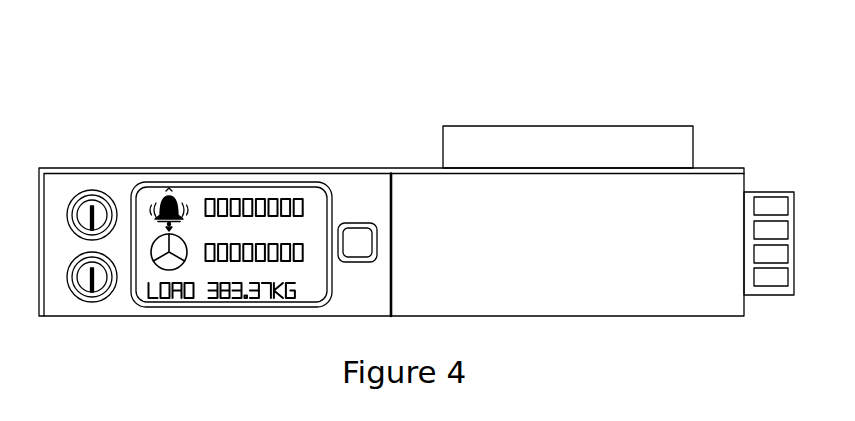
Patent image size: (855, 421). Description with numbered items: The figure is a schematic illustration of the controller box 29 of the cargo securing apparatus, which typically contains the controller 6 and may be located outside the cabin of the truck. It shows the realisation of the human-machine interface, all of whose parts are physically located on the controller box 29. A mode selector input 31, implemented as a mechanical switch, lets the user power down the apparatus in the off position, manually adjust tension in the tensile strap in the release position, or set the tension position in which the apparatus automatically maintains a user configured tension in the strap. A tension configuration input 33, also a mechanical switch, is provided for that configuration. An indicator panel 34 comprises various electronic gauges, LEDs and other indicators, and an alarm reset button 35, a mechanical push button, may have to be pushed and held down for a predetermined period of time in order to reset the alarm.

The controller 6 is at (171, 110).
The controller box 29 is at (423, 168).
The mode selector input 31 is at (97, 190).
The tension configuration input 33 is at (89, 302).
The indicator panel 34 is at (223, 181).
The alarm reset button 35 is at (357, 223).